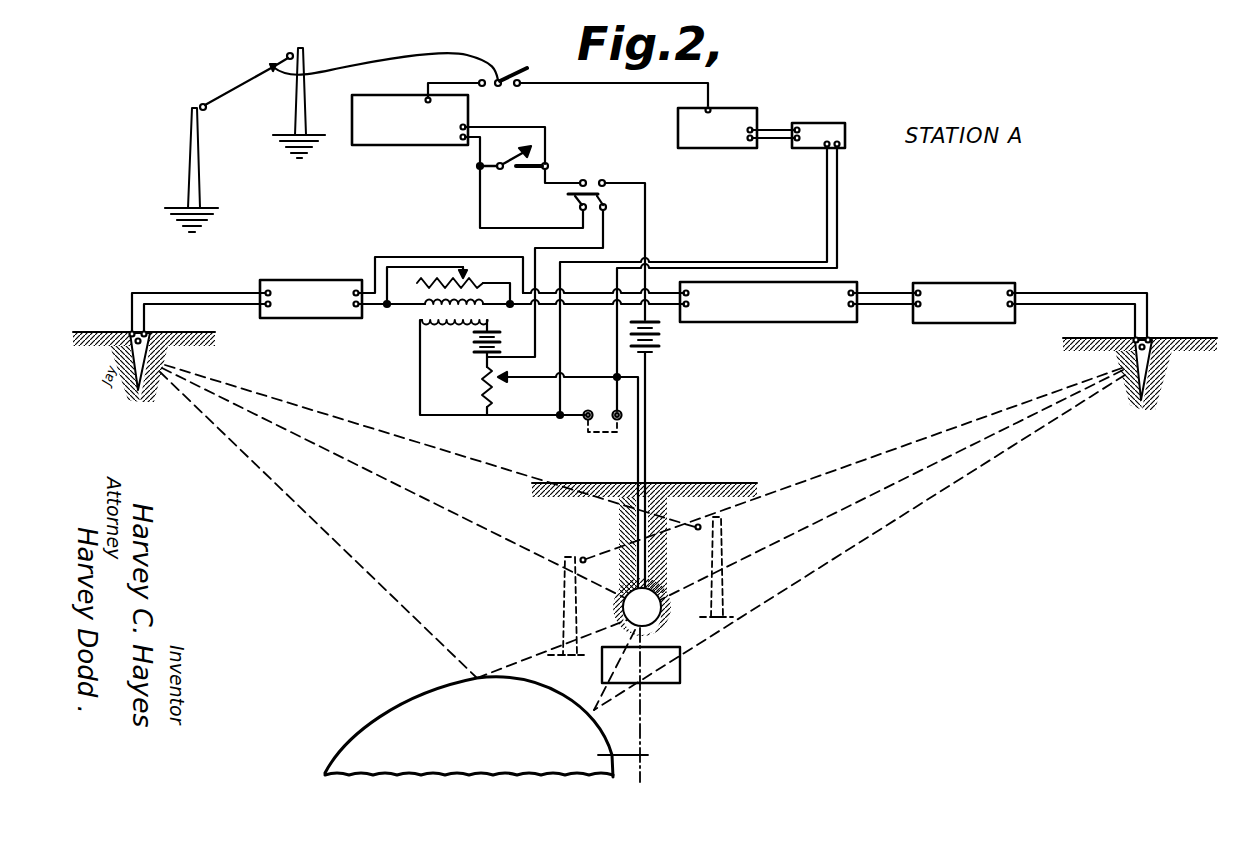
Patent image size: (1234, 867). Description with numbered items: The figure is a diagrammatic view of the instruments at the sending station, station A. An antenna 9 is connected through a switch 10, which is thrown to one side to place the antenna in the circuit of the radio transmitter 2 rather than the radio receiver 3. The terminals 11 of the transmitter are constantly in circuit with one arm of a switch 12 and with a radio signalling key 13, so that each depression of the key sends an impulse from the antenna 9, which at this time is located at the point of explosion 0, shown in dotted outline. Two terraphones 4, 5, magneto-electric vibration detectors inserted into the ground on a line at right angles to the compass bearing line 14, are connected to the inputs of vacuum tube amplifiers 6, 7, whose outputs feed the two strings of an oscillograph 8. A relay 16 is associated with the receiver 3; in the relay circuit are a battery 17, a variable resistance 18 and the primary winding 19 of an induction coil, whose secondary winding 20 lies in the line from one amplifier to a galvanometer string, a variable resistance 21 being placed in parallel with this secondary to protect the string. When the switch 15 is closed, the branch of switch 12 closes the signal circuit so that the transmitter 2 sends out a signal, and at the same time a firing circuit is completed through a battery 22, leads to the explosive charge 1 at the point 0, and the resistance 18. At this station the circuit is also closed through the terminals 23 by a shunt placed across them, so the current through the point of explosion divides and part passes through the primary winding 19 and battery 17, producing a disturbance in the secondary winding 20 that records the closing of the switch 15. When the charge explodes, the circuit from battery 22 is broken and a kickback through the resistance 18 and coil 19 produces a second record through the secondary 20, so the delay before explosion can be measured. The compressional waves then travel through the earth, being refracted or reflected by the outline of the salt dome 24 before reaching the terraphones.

The point of explosion 0 is at (663, 608).
The radio compass 1 is at (680, 661).
The radio transmitter 2 is at (410, 120).
The radio receiver 3 is at (717, 128).
The terraphone 4 is at (137, 367).
The terraphone 5 is at (1150, 373).
The vacuum tube amplifier 6 is at (311, 299).
The vacuum tube amplifier 7 is at (964, 303).
The oscillograph 8 is at (768, 302).
The antenna equipment 9 is at (243, 81).
The switch 10 is at (509, 72).
The terminals of the radio transmitter 11 is at (463, 139).
The switch 12 is at (573, 200).
The radio signalling key 13 is at (517, 172).
The radio compass bearing line 14 is at (648, 731).
The switch 15 is at (605, 200).
The relay 16 is at (815, 130).
The battery 17 is at (498, 349).
The variable resistance 18 is at (494, 391).
The primary winding 19 is at (448, 333).
The secondary winding 20 is at (432, 297).
The variable resistance 21 is at (462, 274).
The battery 22 is at (661, 348).
The terminals 23 is at (603, 433).
The salt dome 24 is at (500, 727).